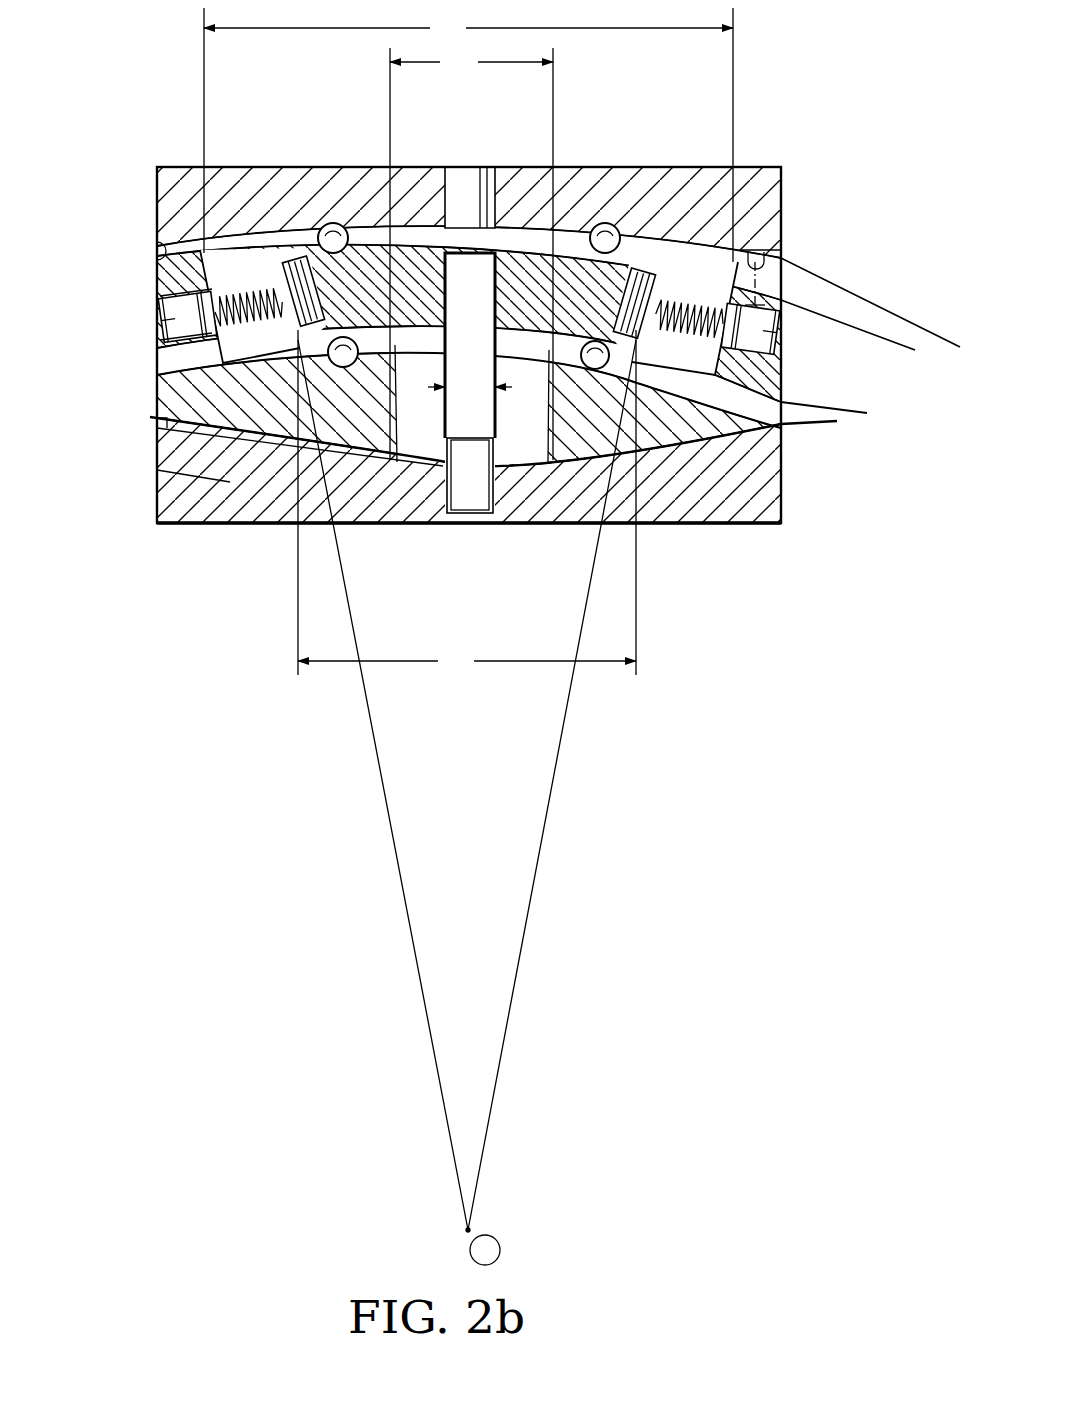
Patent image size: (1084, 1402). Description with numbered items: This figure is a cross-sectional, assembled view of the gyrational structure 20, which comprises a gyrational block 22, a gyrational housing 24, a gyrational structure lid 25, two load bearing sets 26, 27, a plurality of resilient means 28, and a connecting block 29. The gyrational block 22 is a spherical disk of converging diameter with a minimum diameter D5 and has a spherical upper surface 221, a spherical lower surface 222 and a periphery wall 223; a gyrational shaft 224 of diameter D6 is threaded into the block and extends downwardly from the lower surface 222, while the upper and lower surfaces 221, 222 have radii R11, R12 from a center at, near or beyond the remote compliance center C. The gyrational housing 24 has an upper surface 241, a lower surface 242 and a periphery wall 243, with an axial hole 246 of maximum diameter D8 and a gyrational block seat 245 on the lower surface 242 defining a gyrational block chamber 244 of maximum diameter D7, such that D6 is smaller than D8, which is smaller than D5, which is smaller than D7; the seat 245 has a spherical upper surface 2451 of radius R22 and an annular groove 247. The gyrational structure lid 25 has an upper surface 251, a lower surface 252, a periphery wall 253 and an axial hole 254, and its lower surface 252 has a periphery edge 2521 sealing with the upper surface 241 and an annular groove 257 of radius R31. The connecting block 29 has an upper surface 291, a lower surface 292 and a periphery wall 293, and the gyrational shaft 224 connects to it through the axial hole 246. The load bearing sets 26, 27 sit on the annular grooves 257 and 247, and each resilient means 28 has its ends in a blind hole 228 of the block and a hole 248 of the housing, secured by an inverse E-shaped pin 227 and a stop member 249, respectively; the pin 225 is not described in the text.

The gyrational structure 20 is at (130, 170).
The gyrational block 22 is at (640, 268).
The gyrational housing 24 is at (665, 437).
The gyrational structure lid 25 is at (683, 178).
The load bearing set 26 is at (602, 223).
The load bearing set 27 is at (330, 362).
The resilient means 28 is at (258, 262).
The connecting block 29 is at (730, 513).
The spherical upper surface 221 is at (432, 248).
The spherical lower surface 222 is at (505, 392).
The periphery wall 223 is at (686, 192).
The gyrational shaft 224 is at (476, 498).
The pin 225 is at (503, 228).
The inverse E-shaped pin 227 is at (318, 222).
The blind hole 228 is at (287, 333).
The upper surface 241 is at (782, 248).
The lower surface 242 is at (158, 418).
The periphery wall 243 is at (158, 295).
The gyrational block chamber 244 is at (242, 285).
The gyrational block seat 245 is at (357, 442).
The axial hole 246 is at (423, 442).
The annular groove 247 is at (337, 366).
The hole 248 is at (160, 349).
The stop member 249 is at (160, 325).
The upper surface 251 is at (185, 165).
The lower surface 252 is at (158, 252).
The periphery wall 253 is at (157, 218).
The axial hole 254 is at (478, 170).
The annular groove 257 is at (630, 262).
The upper surface 291 is at (158, 448).
The lower surface 292 is at (176, 526).
The periphery wall 293 is at (158, 486).
The spherical upper surface 2451 is at (175, 386).
The periphery edge 2521 is at (782, 268).
The minimum diameter of gyrational block D5 is at (467, 502).
The gyrational shaft diameter D6 is at (470, 386).
The maximum diameter of gyrational block chamber D7 is at (468, 135).
The maximum diameter of housing axial hole D8 is at (471, 254).
The radius of spherical upper surface R11 is at (913, 351).
The radius of spherical lower surface R12 is at (865, 415).
The radius of seat upper surface R22 is at (833, 427).
The radius of lid annular groove R31 is at (945, 346).
The remote compliance center C is at (467, 802).